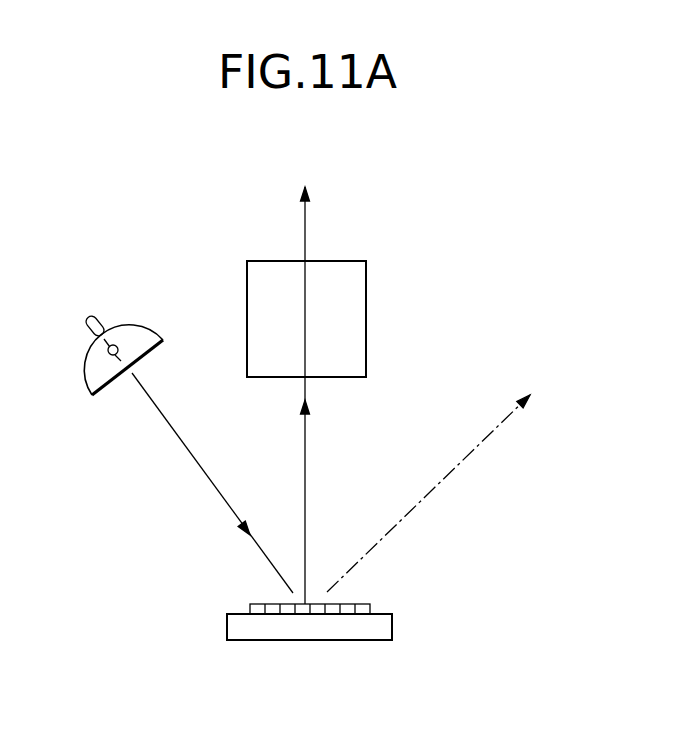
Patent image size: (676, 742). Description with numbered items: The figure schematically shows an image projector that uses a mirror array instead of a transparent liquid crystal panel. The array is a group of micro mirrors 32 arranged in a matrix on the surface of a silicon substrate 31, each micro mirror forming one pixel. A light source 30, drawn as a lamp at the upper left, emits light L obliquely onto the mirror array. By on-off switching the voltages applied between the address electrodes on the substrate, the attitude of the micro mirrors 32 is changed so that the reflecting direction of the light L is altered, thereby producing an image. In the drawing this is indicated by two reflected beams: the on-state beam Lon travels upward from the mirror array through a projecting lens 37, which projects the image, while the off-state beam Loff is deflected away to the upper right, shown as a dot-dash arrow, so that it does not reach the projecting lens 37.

The light source 30 is at (132, 322).
The projecting lens 37 is at (366, 288).
The micro mirrors 32 is at (373, 603).
The silicon substrate 31 is at (308, 640).
The light L is at (193, 460).
The on-state reflected light Lon is at (306, 457).
The off-state reflected light Loff is at (455, 467).